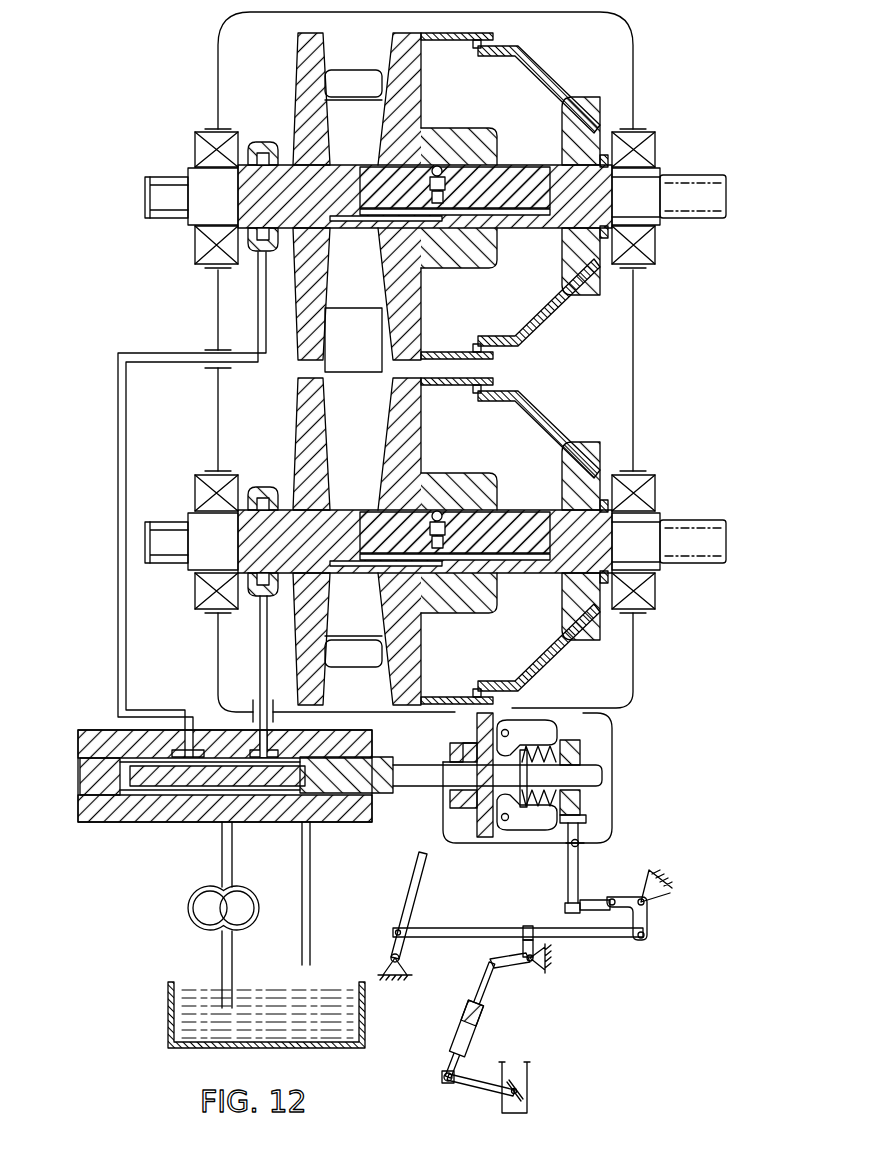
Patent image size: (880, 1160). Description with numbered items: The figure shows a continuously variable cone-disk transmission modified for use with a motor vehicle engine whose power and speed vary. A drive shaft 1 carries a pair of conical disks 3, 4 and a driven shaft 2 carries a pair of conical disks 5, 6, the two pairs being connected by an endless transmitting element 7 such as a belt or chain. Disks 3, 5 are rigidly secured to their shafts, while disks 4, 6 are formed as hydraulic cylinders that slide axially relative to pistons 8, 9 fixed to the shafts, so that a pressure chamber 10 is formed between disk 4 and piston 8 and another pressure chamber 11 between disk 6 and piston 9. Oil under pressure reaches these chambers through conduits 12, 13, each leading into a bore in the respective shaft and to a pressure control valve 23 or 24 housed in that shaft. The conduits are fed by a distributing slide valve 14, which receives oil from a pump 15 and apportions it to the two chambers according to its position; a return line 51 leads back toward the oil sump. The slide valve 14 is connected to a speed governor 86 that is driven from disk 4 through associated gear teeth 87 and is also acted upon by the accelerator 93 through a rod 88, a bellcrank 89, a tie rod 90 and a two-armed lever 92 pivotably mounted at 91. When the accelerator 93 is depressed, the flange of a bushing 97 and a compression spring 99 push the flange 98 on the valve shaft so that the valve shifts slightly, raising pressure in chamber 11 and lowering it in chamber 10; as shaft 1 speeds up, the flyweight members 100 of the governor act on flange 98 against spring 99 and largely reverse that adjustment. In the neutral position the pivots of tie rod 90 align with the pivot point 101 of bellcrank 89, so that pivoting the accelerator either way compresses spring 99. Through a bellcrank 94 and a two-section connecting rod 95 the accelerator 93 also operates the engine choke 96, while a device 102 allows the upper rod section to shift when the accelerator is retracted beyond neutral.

The drive shaft 1 is at (683, 538).
The driven shaft 2 is at (695, 190).
The conical disk 3 is at (308, 652).
The conical disk 4 is at (405, 428).
The conical disk 5 is at (313, 105).
The conical disk 6 is at (398, 57).
The endless transmitting element 7 is at (345, 340).
The piston 8 is at (578, 462).
The piston 9 is at (577, 113).
The pressure chamber 10 is at (528, 628).
The pressure chamber 11 is at (528, 88).
The conduit 12 is at (265, 679).
The conduit 13 is at (127, 497).
The distributing slide valve 14 is at (112, 785).
The pump 15 is at (205, 908).
The pressure control valve 23 is at (426, 519).
The pressure control valve 24 is at (426, 177).
The return line 51 is at (306, 863).
The speed governor 86 is at (556, 720).
The gear teeth 87 is at (495, 710).
The rod 88 is at (447, 937).
The bellcrank 89 is at (640, 926).
The tie rod 90 is at (597, 901).
The pivot 91 is at (573, 847).
The two-armed lever 92 is at (567, 888).
The accelerator 93 is at (412, 895).
The bellcrank 94 is at (515, 962).
The connecting rod 95 is at (452, 1070).
The choke 96 is at (527, 1088).
The bushing 97 is at (570, 792).
The flange 98 is at (530, 772).
The compression spring 99 is at (577, 748).
The flyweight members 100 is at (537, 729).
The pivot point 101 is at (655, 905).
The device 102 is at (470, 1027).